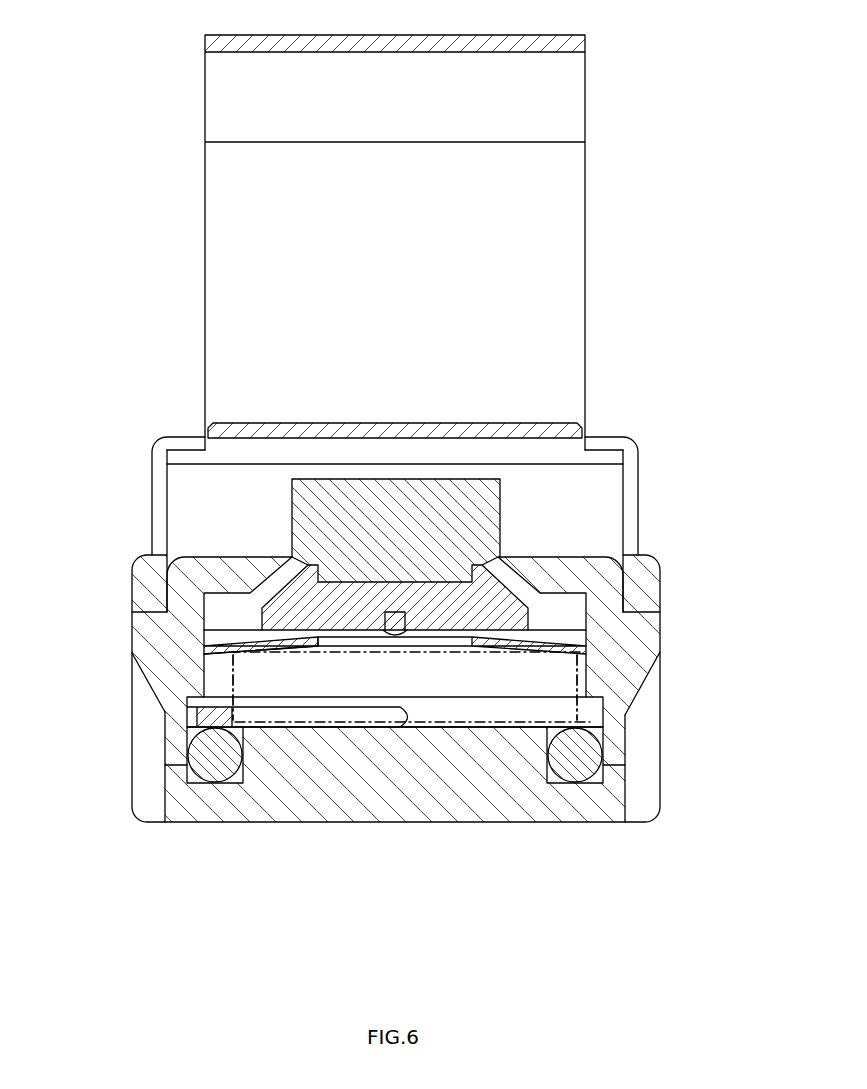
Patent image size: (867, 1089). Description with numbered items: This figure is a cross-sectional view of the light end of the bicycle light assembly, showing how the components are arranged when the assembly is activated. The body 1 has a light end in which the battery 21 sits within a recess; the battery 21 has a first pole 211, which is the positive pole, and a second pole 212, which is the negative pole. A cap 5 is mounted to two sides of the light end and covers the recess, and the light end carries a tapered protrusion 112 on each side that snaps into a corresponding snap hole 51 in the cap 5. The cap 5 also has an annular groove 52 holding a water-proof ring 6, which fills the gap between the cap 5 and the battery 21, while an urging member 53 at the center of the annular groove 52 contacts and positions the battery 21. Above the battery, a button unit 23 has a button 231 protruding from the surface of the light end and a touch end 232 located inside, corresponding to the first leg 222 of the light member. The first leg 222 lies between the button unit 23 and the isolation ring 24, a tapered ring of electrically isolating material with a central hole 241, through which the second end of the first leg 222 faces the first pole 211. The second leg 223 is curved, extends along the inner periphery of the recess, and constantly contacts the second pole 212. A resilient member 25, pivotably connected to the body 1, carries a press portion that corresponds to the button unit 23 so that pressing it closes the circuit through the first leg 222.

The body 1 is at (168, 850).
The cap 5 is at (472, 812).
The water-proof ring 6 is at (215, 758).
The battery 21 is at (355, 883).
The button unit 23 is at (134, 363).
The isolation ring 24 is at (228, 645).
The resilient member 25 is at (603, 99).
The snap hole 51 is at (627, 697).
The annular groove 52 is at (560, 775).
The urging member 53 is at (457, 733).
The tapered protrusion 112 is at (640, 641).
The first pole 211 is at (358, 653).
The second pole 212 is at (400, 722).
The first leg 222 is at (393, 620).
The second leg 223 is at (215, 712).
The button 231 is at (358, 500).
The touch end 232 is at (358, 573).
The central hole 241 is at (326, 640).